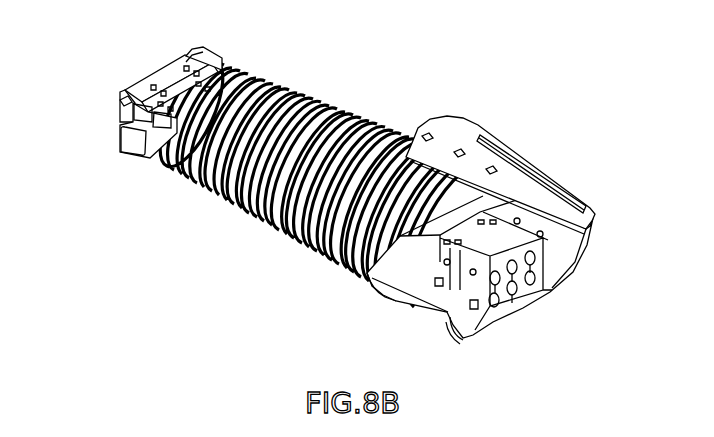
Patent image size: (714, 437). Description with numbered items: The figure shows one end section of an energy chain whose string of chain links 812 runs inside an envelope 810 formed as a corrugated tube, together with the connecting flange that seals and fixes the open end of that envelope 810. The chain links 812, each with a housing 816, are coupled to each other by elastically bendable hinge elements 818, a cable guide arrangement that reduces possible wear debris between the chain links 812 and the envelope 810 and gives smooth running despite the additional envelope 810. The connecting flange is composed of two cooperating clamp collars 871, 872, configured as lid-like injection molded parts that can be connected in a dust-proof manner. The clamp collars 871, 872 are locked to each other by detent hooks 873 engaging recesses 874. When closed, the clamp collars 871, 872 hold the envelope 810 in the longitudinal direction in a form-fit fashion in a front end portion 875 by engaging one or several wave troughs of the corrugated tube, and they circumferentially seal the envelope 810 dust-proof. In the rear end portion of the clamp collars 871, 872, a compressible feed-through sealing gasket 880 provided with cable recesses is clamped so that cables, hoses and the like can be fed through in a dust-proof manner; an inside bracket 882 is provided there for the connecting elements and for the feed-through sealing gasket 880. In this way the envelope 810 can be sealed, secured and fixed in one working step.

The envelope 810 is at (320, 107).
The chain link 812 is at (210, 63).
The housing 816 is at (152, 62).
The hinge element 818 is at (127, 103).
The clamp collar 871 is at (530, 142).
The clamp collar 872 is at (358, 291).
The detent hook 873 is at (393, 293).
The recess 874 is at (459, 152).
The front end portion 875 is at (420, 116).
The feed-through sealing gasket 880 is at (517, 292).
The bracket 882 is at (480, 328).